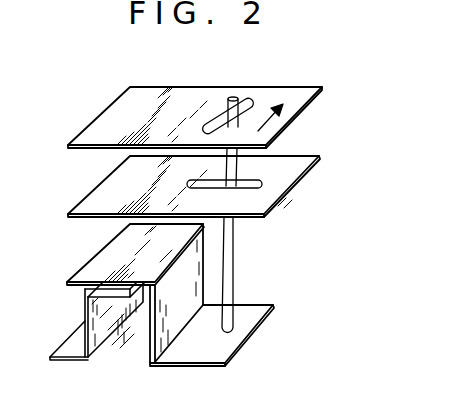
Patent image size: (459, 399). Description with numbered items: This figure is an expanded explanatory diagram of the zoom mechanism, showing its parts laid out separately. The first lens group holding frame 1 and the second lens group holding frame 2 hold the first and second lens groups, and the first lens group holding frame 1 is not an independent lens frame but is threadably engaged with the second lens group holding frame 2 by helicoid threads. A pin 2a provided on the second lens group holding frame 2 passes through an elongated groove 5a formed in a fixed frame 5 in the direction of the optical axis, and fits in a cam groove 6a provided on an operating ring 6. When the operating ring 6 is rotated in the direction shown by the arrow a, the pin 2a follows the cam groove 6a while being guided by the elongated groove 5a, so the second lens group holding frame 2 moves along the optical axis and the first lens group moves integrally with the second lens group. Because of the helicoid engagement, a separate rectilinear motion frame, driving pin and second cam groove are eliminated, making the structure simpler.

The first lens group holding frame 1 is at (76, 347).
The second lens group holding frame 2 is at (250, 318).
The pin 2a is at (229, 253).
The fixed frame 5 is at (276, 195).
The elongated groove 5a is at (257, 181).
The operating ring 6 is at (303, 98).
The cam groove 6a is at (250, 102).
The arrow a is at (287, 122).